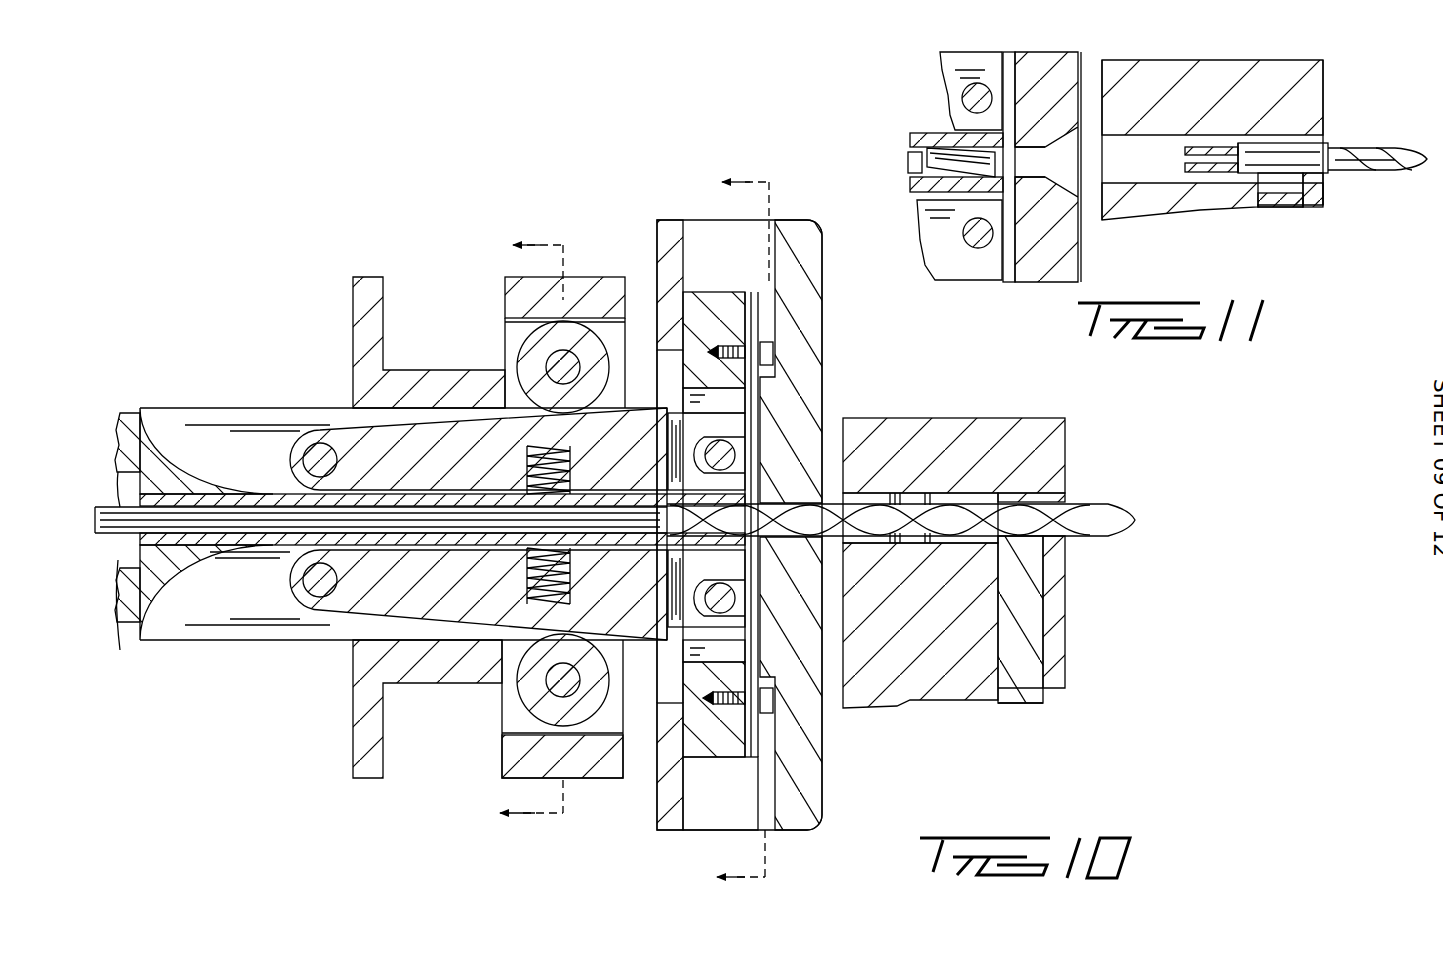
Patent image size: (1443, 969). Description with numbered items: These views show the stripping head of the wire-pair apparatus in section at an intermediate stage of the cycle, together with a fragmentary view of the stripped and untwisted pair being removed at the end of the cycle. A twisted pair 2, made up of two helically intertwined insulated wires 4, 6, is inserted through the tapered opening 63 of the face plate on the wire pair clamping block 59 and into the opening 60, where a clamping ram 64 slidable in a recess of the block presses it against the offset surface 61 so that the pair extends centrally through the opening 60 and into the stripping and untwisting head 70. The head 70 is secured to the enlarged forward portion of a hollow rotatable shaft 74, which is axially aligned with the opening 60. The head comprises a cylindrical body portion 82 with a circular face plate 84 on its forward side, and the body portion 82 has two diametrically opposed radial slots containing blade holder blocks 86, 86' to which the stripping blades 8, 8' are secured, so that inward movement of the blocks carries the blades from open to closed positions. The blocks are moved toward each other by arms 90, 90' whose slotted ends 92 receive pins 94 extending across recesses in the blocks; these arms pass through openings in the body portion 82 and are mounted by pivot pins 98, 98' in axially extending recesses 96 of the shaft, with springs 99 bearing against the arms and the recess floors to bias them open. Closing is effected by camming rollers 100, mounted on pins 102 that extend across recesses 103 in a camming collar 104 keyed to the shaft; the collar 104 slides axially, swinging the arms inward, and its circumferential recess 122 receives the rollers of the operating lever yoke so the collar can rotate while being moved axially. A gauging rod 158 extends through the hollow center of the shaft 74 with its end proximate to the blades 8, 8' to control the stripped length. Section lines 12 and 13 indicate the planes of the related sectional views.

In FIG. 10, the twisted pair 2 is at (1085, 498).
In FIG. 11, the twisted pair 2 is at (1336, 146).
In FIG. 11, the wire 4 is at (1255, 165).
In FIG. 11, the wire 6 is at (1255, 147).
In FIG. 11, the stripping blade 8 is at (1046, 167).
In FIG. 11, the stripping blade 8' is at (1032, 128).
In FIG. 10, the section line 12 is at (514, 530).
In FIG. 10, the section line 13 is at (727, 530).
In FIG. 11, the wire pair clamping block 59 is at (1300, 82).
In FIG. 10, the opening 60 is at (940, 495).
In FIG. 11, the opening 60 is at (1159, 173).
In FIG. 10, the offset surface 61 is at (1052, 500).
In FIG. 11, the offset surface 61 is at (1285, 150).
In FIG. 10, the tapered opening 63 is at (1048, 607).
In FIG. 10, the clamping ram 64 is at (1020, 690).
In FIG. 11, the clamping ram 64 is at (1278, 205).
In FIG. 10, the stripping and untwisting head 70 is at (820, 243).
In FIG. 10, the hollow rotatable shaft 74 is at (130, 555).
In FIG. 10, the cylindrical body portion 82 is at (673, 232).
In FIG. 10, the circular face plate 84 is at (808, 386).
In FIG. 11, the circular face plate 84 is at (1080, 56).
In FIG. 10, the blade holder block 86 is at (728, 561).
In FIG. 10, the blade holder block 86' is at (728, 336).
In FIG. 10, the arm 90 is at (478, 624).
In FIG. 10, the arm 90' is at (478, 431).
In FIG. 10, the arm end 92 is at (699, 479).
In FIG. 11, the arm end 92 is at (970, 65).
In FIG. 10, the pin 94 is at (712, 448).
In FIG. 11, the pin 94 is at (962, 92).
In FIG. 10, the recess 96 is at (202, 620).
In FIG. 10, the pivot pin 98 is at (283, 591).
In FIG. 10, the pivot pin 98' is at (306, 413).
In FIG. 10, the spring 99 is at (527, 463).
In FIG. 10, the camming roller 100 is at (540, 352).
In FIG. 10, the pin 102 is at (556, 368).
In FIG. 10, the recess 103 is at (500, 310).
In FIG. 10, the camming collar 104 is at (600, 295).
In FIG. 10, the circumferential recess 122 is at (457, 368).
In FIG. 10, the rod 158 is at (217, 523).
In FIG. 11, the rod 158 is at (910, 163).